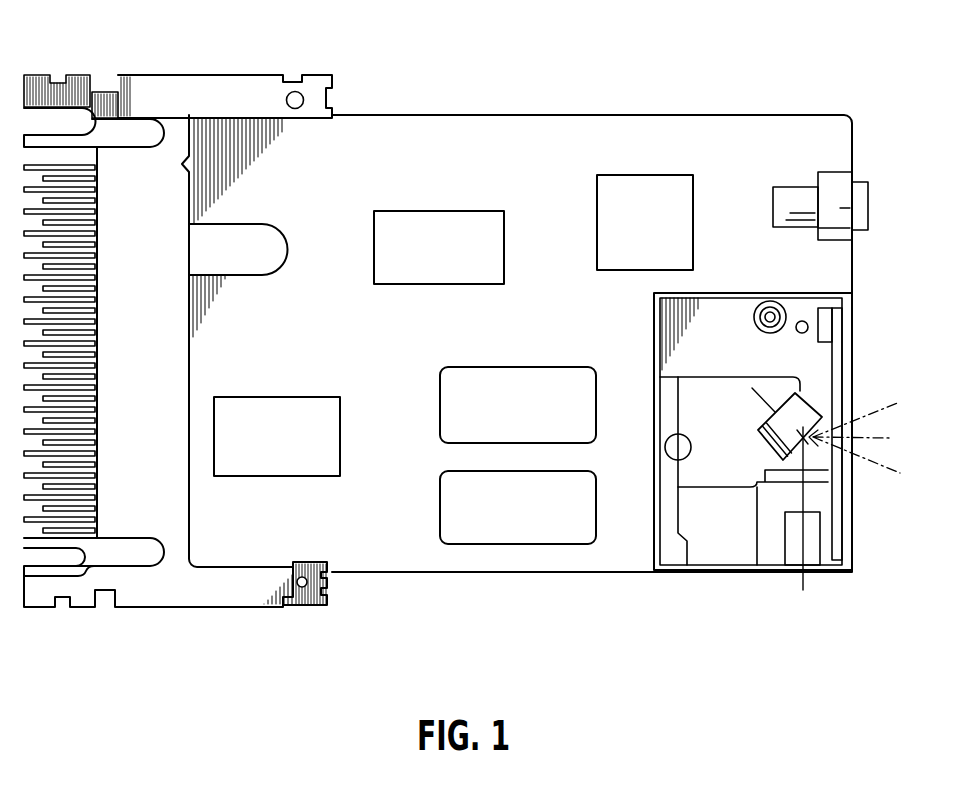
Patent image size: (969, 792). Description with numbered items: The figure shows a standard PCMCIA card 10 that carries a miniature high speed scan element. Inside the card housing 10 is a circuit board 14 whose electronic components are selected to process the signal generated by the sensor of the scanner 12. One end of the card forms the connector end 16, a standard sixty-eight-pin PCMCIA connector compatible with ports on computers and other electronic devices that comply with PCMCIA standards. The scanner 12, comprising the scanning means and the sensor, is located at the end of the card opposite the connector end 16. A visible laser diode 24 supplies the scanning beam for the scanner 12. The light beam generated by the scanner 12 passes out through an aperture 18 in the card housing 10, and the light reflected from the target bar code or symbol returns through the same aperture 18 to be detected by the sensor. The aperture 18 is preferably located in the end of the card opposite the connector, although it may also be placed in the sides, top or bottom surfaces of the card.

The PCMCIA card 10 is at (508, 127).
The scanner 12 is at (857, 305).
The circuit board 14 is at (379, 549).
The connector end 16 is at (195, 88).
The aperture 18 is at (855, 432).
The visible laser diode 24 is at (803, 525).